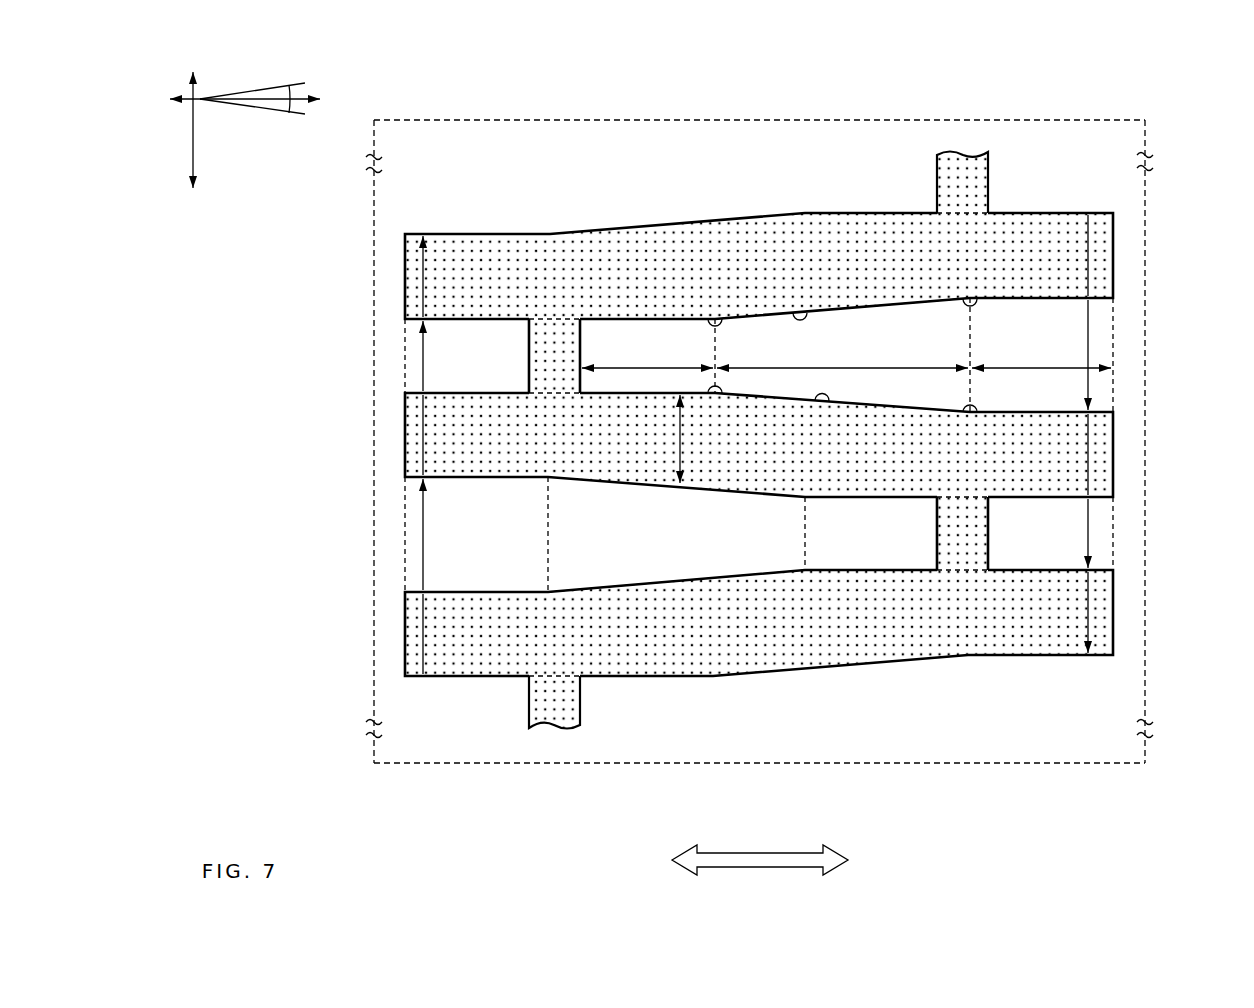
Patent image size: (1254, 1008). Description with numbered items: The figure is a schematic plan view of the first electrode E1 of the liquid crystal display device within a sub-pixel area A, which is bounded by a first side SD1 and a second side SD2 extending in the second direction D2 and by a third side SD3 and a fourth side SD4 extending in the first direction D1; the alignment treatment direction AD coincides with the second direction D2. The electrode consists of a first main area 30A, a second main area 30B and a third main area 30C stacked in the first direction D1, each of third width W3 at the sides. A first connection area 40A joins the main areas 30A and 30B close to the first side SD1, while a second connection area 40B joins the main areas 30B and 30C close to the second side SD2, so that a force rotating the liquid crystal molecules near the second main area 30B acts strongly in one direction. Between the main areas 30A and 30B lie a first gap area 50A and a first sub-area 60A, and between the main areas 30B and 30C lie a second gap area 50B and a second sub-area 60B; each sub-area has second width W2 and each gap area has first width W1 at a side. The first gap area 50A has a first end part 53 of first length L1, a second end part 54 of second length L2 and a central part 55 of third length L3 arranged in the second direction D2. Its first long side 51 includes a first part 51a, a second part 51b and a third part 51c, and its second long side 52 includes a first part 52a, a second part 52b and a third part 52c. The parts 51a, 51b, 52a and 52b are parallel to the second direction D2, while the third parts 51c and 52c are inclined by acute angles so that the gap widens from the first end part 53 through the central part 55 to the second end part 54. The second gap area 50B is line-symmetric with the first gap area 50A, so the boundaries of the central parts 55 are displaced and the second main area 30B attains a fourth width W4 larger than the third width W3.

The first main area 30A is at (1106, 261).
The second main area 30B is at (1106, 444).
The third main area 30C is at (1112, 606).
The first connection area 40A is at (556, 330).
The second connection area 40B is at (958, 560).
The first gap area 50A is at (1104, 351).
The second gap area 50B is at (412, 544).
The first long side 51 is at (865, 175).
The first part 51a is at (712, 318).
The second part 51b is at (968, 300).
The third part 51c is at (799, 314).
The second long side 52 is at (890, 458).
The first part 52a is at (715, 388).
The second part 52b is at (970, 414).
The third part 52c is at (822, 400).
The first end part 53 is at (624, 330).
The second end part 54 is at (1028, 314).
The central part 55 is at (866, 320).
The first sub-area 60A is at (410, 357).
The second sub-area 60B is at (1033, 560).
The first electrode E1 is at (457, 212).
The sub-pixel area A is at (758, 438).
The first side SD1 is at (370, 500).
The second side SD2 is at (1148, 485).
The third side SD3 is at (737, 118).
The fourth side SD4 is at (711, 766).
The first direction D1 is at (174, 130).
The second direction D2 is at (258, 100).
The first width W1 is at (755, 445).
The second width W2 is at (755, 444).
The third width W3 is at (755, 444).
The fourth width W4 is at (659, 439).
The first length L1 is at (647, 353).
The second length L2 is at (1041, 353).
The third length L3 is at (842, 353).
The alignment treatment direction AD is at (760, 851).